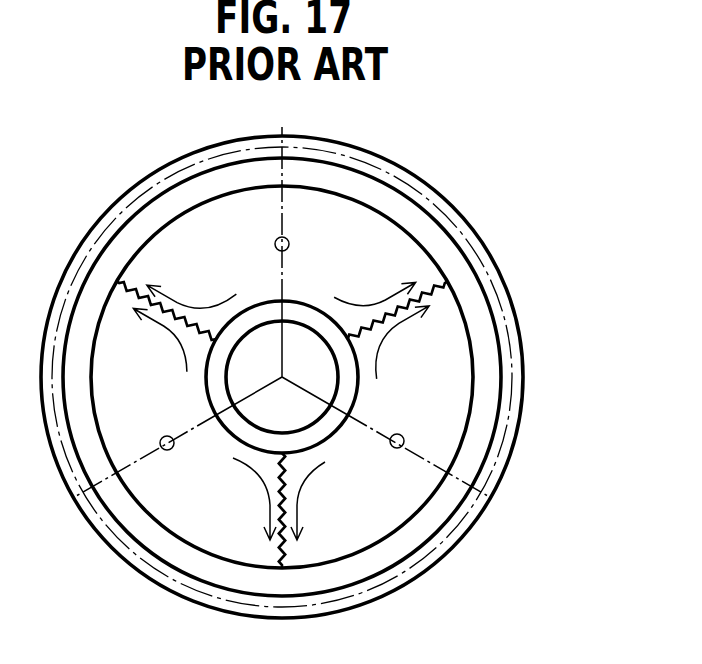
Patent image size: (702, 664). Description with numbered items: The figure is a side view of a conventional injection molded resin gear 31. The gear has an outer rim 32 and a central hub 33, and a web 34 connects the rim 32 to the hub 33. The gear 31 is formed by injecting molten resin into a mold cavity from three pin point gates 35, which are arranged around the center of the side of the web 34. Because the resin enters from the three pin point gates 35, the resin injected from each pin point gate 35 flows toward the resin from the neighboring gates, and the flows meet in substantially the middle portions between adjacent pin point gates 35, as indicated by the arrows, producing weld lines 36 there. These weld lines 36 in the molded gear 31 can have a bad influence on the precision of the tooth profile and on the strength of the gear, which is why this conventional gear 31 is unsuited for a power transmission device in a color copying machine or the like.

The injection molded resin gear 31 is at (464, 217).
The rim 32 is at (497, 391).
The hub 33 is at (354, 393).
The web 34 is at (455, 312).
The pin point gate 35 is at (290, 244).
The weld line 36 is at (280, 557).